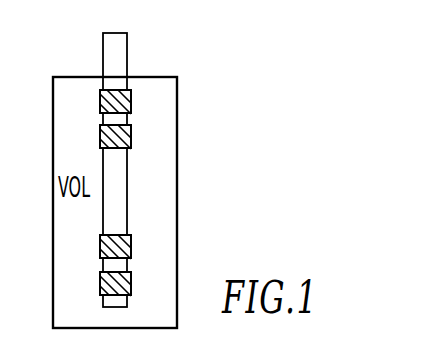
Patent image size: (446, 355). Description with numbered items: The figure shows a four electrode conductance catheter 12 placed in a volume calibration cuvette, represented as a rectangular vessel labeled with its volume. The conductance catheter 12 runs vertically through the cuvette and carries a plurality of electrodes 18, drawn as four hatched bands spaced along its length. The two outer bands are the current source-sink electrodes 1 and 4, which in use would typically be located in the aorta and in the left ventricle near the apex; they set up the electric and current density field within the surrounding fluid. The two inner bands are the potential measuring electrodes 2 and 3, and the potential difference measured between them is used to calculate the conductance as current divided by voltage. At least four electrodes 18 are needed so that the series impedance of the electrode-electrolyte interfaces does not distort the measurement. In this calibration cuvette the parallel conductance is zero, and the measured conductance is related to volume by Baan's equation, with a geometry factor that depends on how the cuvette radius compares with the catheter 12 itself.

The conductance catheter 12 is at (156, 188).
The electrodes 18 is at (133, 190).
The current source-sink electrode 1 is at (102, 98).
The potential measuring electrode 2 is at (126, 138).
The potential measuring electrode 3 is at (126, 244).
The current source-sink electrode 4 is at (104, 286).